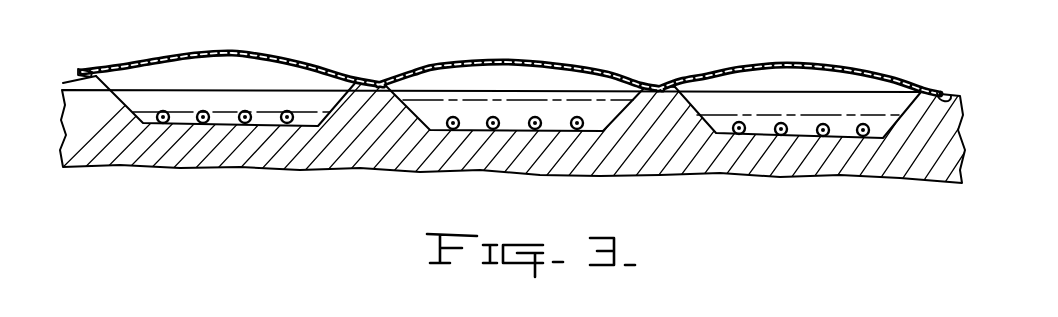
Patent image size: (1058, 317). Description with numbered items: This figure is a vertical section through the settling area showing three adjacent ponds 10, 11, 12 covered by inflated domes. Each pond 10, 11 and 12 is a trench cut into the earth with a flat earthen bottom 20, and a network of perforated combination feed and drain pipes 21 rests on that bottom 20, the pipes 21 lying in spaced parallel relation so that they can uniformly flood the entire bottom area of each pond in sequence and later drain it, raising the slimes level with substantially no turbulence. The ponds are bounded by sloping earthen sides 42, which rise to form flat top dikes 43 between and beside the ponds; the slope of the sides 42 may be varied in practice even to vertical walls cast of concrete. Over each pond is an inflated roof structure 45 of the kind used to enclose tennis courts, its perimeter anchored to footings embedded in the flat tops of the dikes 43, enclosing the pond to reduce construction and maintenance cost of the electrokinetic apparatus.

The pond 10 is at (255, 91).
The pond 11 is at (552, 87).
The pond 12 is at (803, 97).
The flat earthen bottom 20 is at (257, 127).
The perforated combination feed and drain pipes 21 is at (206, 111).
The sloping earthen sides 42 is at (118, 102).
The flat top dikes 43 is at (113, 80).
The inflated roof structure 45 is at (258, 49).